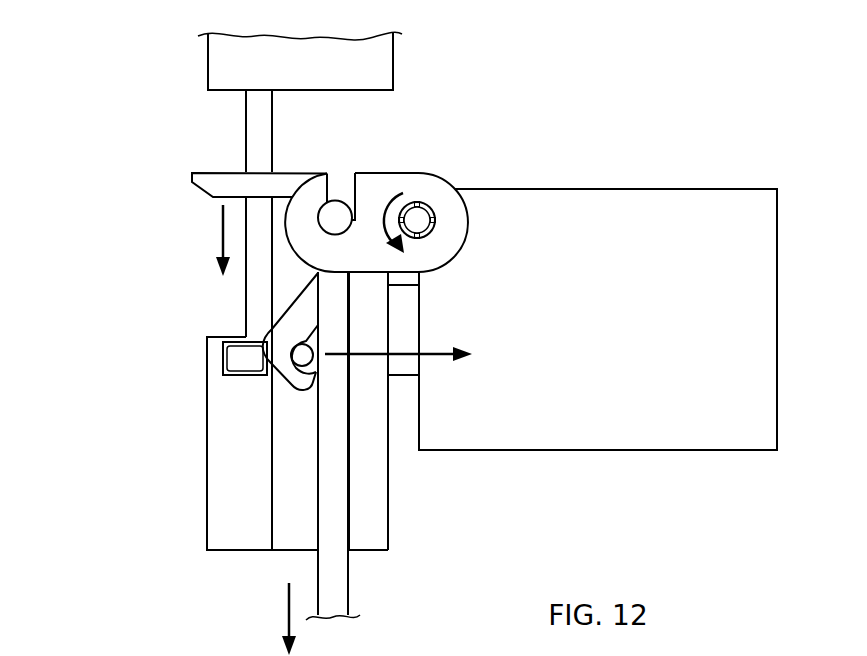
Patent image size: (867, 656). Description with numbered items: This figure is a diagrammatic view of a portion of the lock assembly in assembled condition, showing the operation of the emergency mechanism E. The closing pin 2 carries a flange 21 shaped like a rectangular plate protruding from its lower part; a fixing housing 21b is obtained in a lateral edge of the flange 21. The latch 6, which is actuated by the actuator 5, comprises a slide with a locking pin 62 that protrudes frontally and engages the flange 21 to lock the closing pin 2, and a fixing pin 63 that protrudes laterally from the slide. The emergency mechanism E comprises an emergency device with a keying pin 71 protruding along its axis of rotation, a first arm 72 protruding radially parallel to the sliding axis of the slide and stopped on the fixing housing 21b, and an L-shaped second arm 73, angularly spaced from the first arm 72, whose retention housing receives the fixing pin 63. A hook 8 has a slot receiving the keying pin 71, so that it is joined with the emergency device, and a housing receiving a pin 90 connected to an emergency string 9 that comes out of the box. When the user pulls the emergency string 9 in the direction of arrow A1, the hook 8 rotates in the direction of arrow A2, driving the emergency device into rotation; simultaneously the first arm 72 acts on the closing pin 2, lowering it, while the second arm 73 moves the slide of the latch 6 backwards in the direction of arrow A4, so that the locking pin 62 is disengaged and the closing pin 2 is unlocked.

The closing pin 2 is at (200, 66).
The flange 21 is at (225, 443).
The fixing housing 21b is at (262, 196).
The first arm 72 is at (215, 181).
The hook 8 is at (425, 177).
The pin 90 is at (336, 212).
The keying pin 71 is at (418, 222).
The actuator 5 is at (645, 466).
The latch 6 is at (396, 498).
The emergency string 9 is at (338, 587).
The locking pin 62 is at (240, 352).
The fixing pin 63 is at (296, 346).
The second arm 73 is at (300, 392).
The emergency mechanism E is at (465, 177).
The arrow A1 is at (266, 619).
The arrow A2 is at (380, 211).
The arrow A4 is at (398, 335).